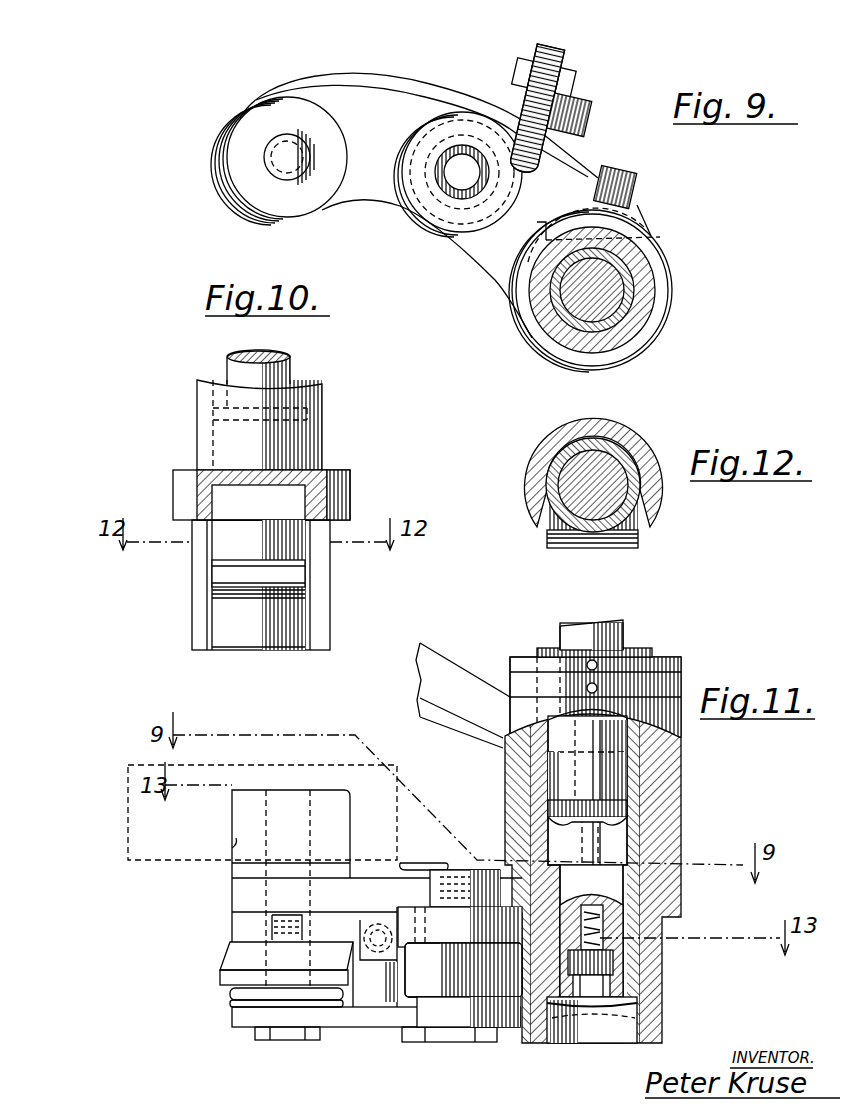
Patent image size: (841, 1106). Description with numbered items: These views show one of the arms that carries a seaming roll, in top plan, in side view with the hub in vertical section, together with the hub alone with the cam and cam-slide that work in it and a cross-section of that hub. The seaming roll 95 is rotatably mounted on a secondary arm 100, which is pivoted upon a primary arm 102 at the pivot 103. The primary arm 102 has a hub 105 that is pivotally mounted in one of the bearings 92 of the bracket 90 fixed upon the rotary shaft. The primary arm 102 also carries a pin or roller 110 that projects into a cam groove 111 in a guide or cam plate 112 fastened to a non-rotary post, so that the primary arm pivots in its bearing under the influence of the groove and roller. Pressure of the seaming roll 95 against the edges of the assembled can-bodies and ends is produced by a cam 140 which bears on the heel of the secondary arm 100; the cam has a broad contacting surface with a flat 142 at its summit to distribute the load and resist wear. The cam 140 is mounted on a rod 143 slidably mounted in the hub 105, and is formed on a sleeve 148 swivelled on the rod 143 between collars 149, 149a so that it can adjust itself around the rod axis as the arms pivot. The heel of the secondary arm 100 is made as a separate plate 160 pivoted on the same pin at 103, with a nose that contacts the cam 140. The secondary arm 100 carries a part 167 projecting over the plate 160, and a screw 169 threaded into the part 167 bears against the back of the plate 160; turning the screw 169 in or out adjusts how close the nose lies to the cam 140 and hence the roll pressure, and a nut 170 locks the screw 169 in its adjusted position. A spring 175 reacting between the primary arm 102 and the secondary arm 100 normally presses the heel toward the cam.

In FIG. 11, the bracket 90 is at (435, 656).
In FIG. 11, the bearings 92 is at (660, 788).
In FIG. 9, the seaming roll 95 is at (226, 130).
In FIG. 11, the seaming roll 95 is at (229, 964).
In FIG. 9, the secondary arm 100 is at (375, 80).
In FIG. 11, the secondary arm 100 is at (392, 1028).
In FIG. 9, the primary arm 102 is at (372, 203).
In FIG. 11, the primary arm 102 is at (396, 887).
In FIG. 9, the pivot 103 is at (463, 168).
In FIG. 11, the pivot 103 is at (441, 1000).
In FIG. 9, the hub 105 is at (530, 334).
In FIG. 10, the hub 105 is at (197, 430).
In FIG. 12, the hub 105 is at (530, 475).
In FIG. 11, the hub 105 is at (650, 830).
In FIG. 9, the pin or roller 110 is at (240, 164).
In FIG. 11, the pin or roller 110 is at (325, 808).
In FIG. 11, the cam groove 111 is at (233, 846).
In FIG. 11, the guide or cam plate 112 is at (132, 834).
In FIG. 9, the cam 140 is at (662, 237).
In FIG. 10, the cam 140 is at (226, 597).
In FIG. 12, the cam 140 is at (603, 546).
In FIG. 10, the flat 142 is at (299, 578).
In FIG. 12, the flat 142 is at (640, 542).
In FIG. 9, the rod 143 is at (612, 289).
In FIG. 10, the rod 143 is at (236, 374).
In FIG. 12, the rod 143 is at (600, 472).
In FIG. 11, the rod 143 is at (622, 625).
In FIG. 9, the sleeve 148 is at (640, 324).
In FIG. 10, the sleeve 148 is at (224, 507).
In FIG. 12, the sleeve 148 is at (640, 497).
In FIG. 11, the sleeve 148 is at (632, 930).
In FIG. 11, the collar 149 is at (612, 996).
In FIG. 10, the collar 149a is at (307, 410).
In FIG. 11, the collar 149a is at (575, 804).
In FIG. 9, the plate 160 is at (638, 187).
In FIG. 11, the plate 160 is at (637, 1005).
In FIG. 9, the part 167 is at (612, 113).
In FIG. 9, the screw 169 is at (562, 46).
In FIG. 9, the nut 170 is at (586, 68).
In FIG. 11, the spring 175 is at (372, 952).